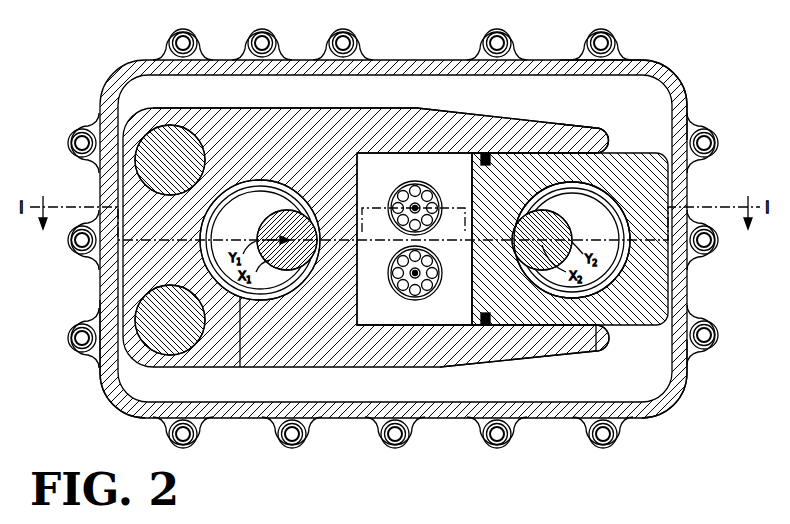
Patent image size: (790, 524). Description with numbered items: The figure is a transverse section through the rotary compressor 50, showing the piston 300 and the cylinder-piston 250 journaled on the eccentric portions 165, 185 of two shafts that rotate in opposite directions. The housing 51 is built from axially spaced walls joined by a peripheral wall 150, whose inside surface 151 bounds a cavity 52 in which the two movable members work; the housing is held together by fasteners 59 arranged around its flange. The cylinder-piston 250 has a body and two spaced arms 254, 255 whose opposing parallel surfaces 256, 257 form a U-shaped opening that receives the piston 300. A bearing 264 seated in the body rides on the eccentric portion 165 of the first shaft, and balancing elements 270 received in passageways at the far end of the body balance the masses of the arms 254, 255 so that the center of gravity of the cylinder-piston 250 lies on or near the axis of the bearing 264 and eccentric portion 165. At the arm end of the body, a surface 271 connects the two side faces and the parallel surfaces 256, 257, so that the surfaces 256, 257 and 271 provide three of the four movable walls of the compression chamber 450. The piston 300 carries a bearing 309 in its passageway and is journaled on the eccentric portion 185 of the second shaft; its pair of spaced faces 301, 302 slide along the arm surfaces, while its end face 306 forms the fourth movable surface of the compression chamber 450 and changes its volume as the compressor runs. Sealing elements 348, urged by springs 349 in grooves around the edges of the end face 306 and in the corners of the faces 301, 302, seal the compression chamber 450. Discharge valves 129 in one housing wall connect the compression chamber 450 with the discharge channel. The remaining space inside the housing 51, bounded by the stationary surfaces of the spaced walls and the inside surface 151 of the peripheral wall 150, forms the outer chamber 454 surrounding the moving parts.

The rotary compressor 50 is at (128, 63).
The housing 51 is at (641, 60).
The cavity 52 is at (258, 105).
The fastening bolt 59 is at (357, 42).
The discharge valve 129 is at (397, 188).
The peripheral wall 150 is at (677, 100).
The inside surface 151 is at (669, 366).
The eccentric portion 165 is at (253, 236).
The eccentric portion 185 is at (605, 236).
The cylinder-piston 250 is at (297, 109).
The arm 254 is at (457, 133).
The arm 255 is at (428, 350).
The opposing parallel surface 256 is at (421, 154).
The opposing parallel surface 257 is at (405, 325).
The bearing 264 is at (237, 368).
The balancing element 270 is at (163, 147).
The surface 271 is at (366, 237).
The piston 300 is at (623, 173).
The spaced face 301 is at (688, 166).
The spaced face 302 is at (688, 312).
The end face 306 is at (473, 307).
The bearing 309 is at (603, 278).
The sealing element 348 is at (485, 153).
The spring 349 is at (520, 124).
The compression chamber 450 is at (459, 247).
The chamber 454 is at (628, 381).